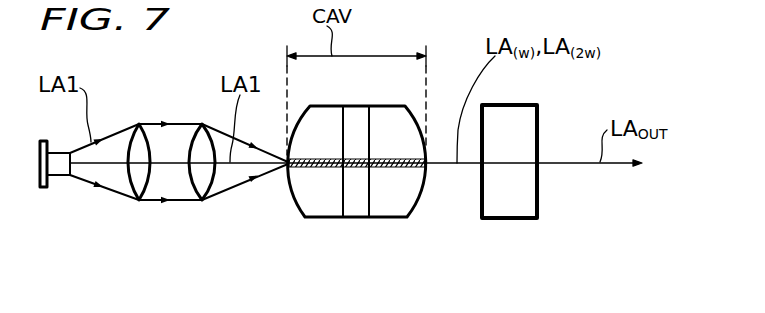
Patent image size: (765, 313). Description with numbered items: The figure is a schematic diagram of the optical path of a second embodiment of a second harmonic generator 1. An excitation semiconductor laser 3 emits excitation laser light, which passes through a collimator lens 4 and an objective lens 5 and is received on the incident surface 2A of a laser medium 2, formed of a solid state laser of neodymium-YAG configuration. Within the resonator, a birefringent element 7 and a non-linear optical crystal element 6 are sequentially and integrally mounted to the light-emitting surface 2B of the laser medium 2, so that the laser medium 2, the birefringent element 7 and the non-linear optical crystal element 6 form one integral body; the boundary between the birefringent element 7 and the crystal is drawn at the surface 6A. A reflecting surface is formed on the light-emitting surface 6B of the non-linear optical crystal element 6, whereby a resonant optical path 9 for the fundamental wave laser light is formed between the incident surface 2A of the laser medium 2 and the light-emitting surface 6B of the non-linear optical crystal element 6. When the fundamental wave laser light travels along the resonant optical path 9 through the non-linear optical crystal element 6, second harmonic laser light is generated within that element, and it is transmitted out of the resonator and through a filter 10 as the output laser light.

The laser light wavelength converting apparatus 1 is at (542, 20).
The laser medium 2 is at (325, 200).
The incident surface 2A is at (280, 203).
The light-emitting surface 2B is at (351, 124).
The excitation semiconductor laser 3 is at (57, 178).
The collimator lens 4 is at (131, 176).
The objective lens 5 is at (197, 150).
The non-linear optical crystal element 6 is at (405, 200).
The surface of optical element 6A is at (364, 186).
The light-emitting surface 6B is at (458, 190).
The birefringent element 7 is at (356, 205).
The resonant optical path 9 is at (397, 157).
The filter 10 is at (518, 120).